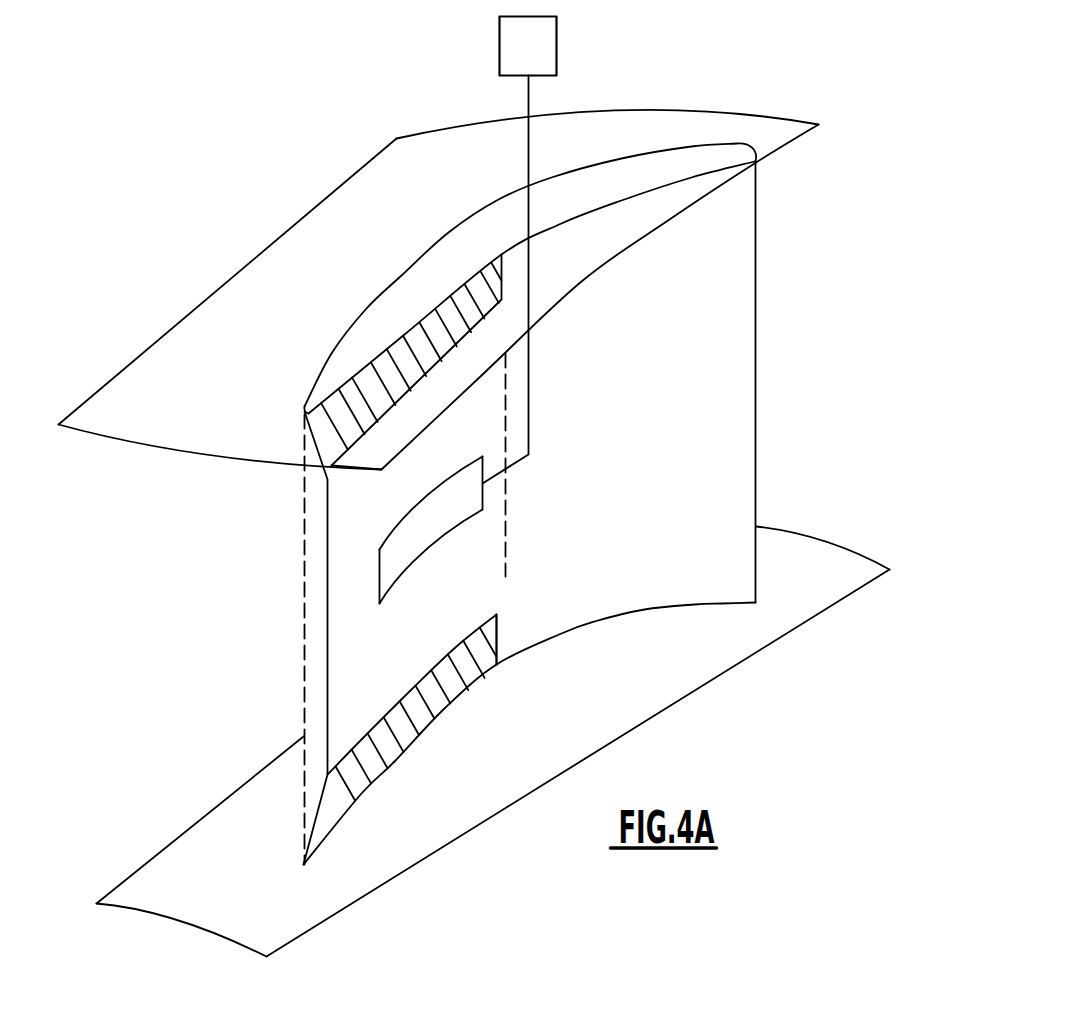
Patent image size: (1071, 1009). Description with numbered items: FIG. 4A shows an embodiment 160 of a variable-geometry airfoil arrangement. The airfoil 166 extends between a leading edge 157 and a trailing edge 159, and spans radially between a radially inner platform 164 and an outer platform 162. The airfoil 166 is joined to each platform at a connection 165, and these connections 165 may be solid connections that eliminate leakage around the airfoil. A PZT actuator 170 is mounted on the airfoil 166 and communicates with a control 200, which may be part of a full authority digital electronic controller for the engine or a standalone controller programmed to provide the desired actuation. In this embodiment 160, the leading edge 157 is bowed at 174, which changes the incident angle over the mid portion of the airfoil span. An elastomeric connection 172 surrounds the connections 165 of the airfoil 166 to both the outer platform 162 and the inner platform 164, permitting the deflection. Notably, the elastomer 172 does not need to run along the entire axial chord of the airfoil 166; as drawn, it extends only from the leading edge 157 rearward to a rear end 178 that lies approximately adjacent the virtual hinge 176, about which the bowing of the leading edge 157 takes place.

The leading edge 157 is at (311, 585).
The trailing edge 159 is at (757, 432).
The embodiment 160 is at (597, 90).
The outer platform 162 is at (713, 122).
The radially inner platform 164 is at (818, 548).
The connection 165 is at (626, 195).
The airfoil 166 is at (605, 563).
The PZT actuator 170 is at (421, 524).
The elastomeric connection 172 is at (360, 377).
The bowed portion 174 is at (326, 617).
The virtual hinge 176 is at (504, 542).
The rear end 178 is at (495, 647).
The control 200 is at (498, 50).